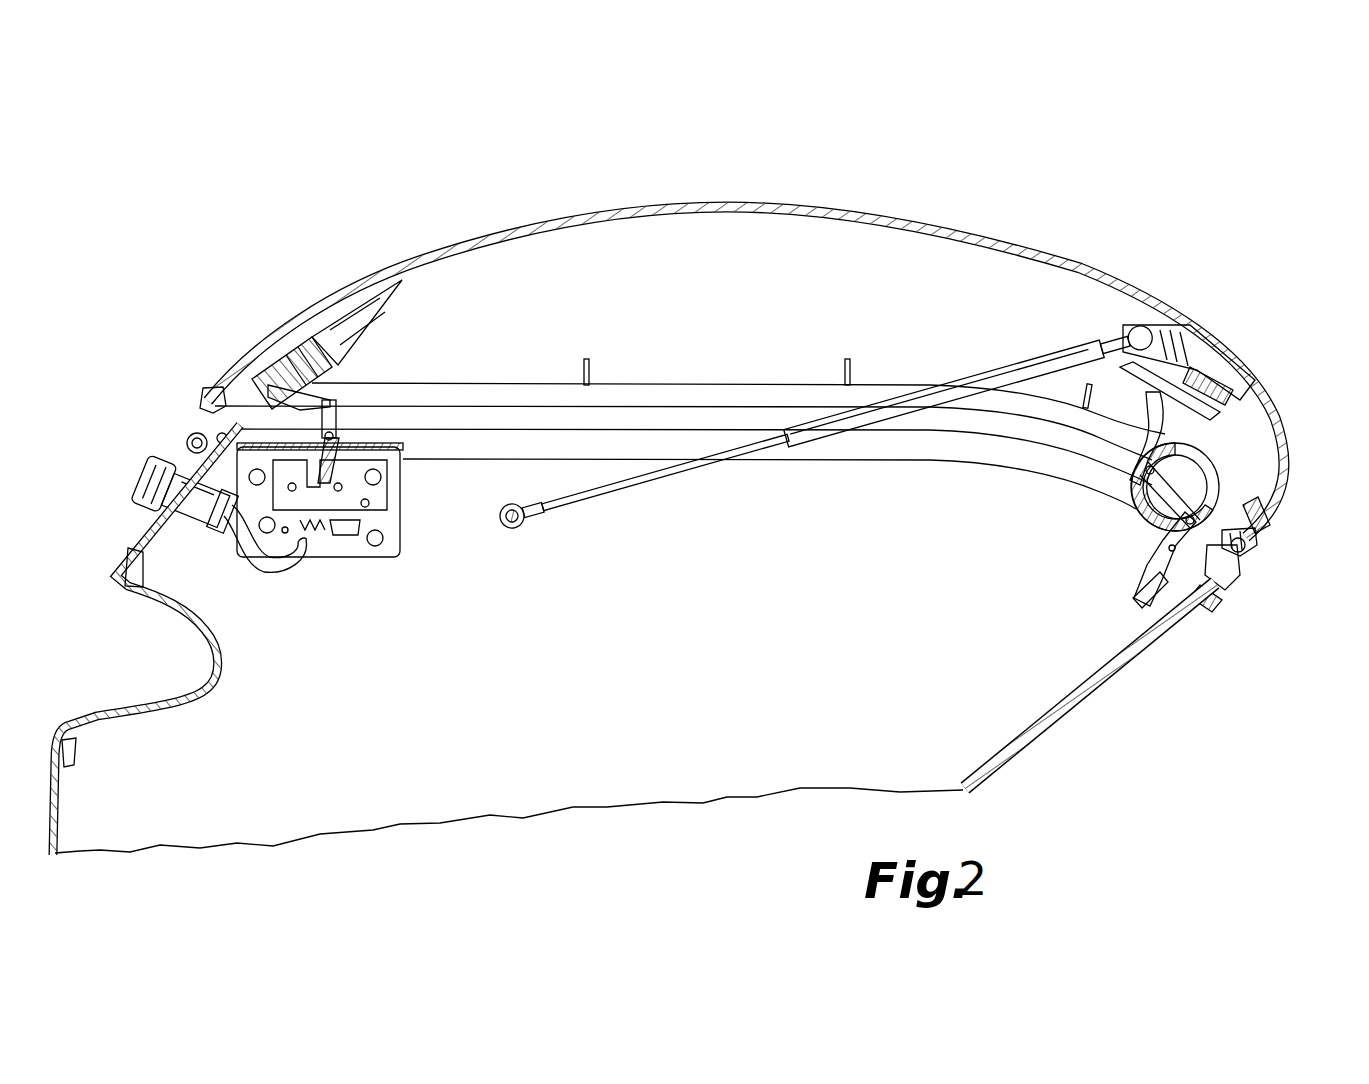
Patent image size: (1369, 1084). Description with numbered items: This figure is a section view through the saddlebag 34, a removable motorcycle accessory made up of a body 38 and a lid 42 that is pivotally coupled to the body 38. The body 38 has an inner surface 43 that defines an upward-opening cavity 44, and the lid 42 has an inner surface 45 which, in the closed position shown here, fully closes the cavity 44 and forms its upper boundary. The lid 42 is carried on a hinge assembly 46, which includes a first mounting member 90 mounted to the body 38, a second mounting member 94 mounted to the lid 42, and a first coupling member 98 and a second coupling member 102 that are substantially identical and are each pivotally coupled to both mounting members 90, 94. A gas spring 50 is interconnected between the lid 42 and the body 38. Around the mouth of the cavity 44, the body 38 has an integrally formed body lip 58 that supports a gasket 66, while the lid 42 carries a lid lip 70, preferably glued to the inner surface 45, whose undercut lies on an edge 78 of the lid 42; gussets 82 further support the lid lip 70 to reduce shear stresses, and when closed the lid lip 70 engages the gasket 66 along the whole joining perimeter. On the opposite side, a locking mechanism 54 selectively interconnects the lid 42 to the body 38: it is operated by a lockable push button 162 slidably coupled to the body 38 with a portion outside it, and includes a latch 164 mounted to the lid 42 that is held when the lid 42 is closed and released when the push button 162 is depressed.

The saddlebag 34 is at (529, 158).
The body 38 is at (1113, 662).
The lid 42 is at (1004, 250).
The inner surface 43 is at (1013, 741).
The cavity 44 is at (613, 782).
The inner surface 45 is at (736, 216).
The hinge assembly 46 is at (1230, 438).
The gas spring 50 is at (957, 381).
The locking mechanism 54 is at (303, 570).
The body lip 58 is at (213, 408).
The gasket 66 is at (190, 437).
The lid lip 70 is at (237, 378).
The edge 78 is at (222, 436).
The gussets 82 is at (845, 380).
The first mounting member 90 is at (1140, 591).
The second mounting member 94 is at (1136, 438).
The first coupling member 98 is at (1132, 512).
The second coupling member 102 is at (1210, 470).
The push button 162 is at (140, 474).
The latch 164 is at (333, 435).